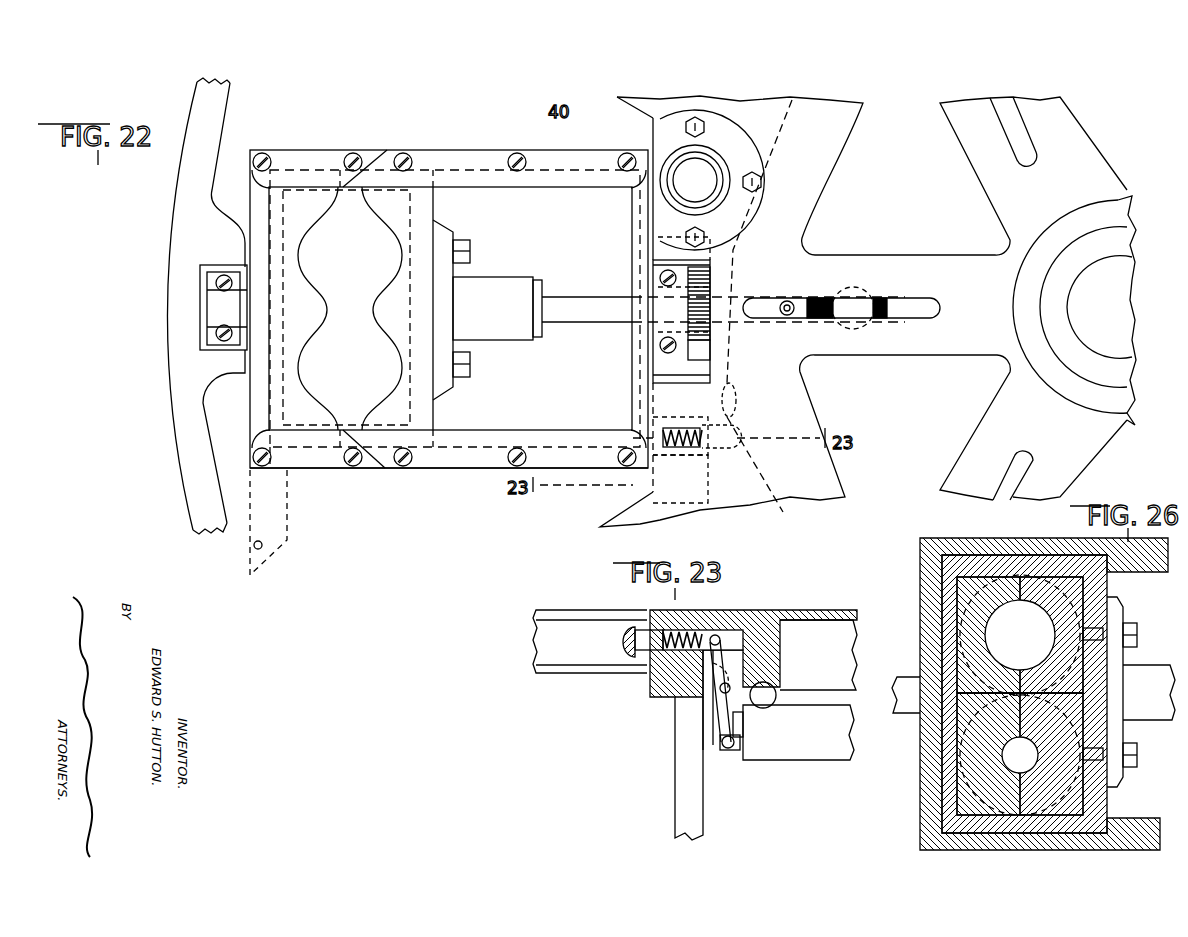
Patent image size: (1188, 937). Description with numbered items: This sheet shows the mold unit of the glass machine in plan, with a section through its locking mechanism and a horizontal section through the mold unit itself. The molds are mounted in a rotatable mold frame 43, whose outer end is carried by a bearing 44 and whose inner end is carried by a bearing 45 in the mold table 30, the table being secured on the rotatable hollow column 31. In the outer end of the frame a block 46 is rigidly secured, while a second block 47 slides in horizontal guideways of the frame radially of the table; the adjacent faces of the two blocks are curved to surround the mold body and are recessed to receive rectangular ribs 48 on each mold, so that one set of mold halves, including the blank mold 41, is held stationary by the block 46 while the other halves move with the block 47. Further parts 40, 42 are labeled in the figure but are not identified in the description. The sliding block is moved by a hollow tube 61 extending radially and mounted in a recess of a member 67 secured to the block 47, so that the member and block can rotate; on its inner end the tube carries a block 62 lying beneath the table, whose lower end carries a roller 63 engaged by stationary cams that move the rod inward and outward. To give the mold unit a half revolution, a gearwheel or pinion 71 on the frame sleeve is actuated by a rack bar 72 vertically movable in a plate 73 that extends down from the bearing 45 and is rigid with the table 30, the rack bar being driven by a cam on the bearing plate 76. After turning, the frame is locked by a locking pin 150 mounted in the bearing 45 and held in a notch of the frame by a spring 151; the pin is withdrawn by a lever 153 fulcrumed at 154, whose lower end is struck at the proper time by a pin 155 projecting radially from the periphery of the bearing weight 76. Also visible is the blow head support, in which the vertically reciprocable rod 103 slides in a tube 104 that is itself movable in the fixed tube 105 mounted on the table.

In FIG. 22, the mold table 30 is at (183, 204).
In FIG. 22, the rotatable hollow column 31 is at (1100, 240).
In FIG. 22, the housing 40 is at (449, 362).
In FIG. 22, the rotatable mold frame 43 is at (462, 473).
In FIG. 23, the rotatable mold frame 43 is at (574, 654).
In FIG. 26, the rotatable mold frame 43 is at (950, 541).
In FIG. 22, the bearing 44 is at (214, 289).
In FIG. 22, the bearing 45 is at (668, 369).
In FIG. 23, the bearing 45 is at (658, 690).
In FIG. 22, the block 46 is at (278, 243).
In FIG. 22, the slidable block 47 is at (425, 211).
In FIG. 22, the hollow tube 61 is at (597, 301).
In FIG. 22, the block 62 is at (832, 296).
In FIG. 22, the roller 63 is at (860, 290).
In FIG. 22, the member 67 is at (507, 283).
In FIG. 22, the gearwheel or pinion 71 is at (712, 290).
In FIG. 22, the rack bar 72 is at (700, 351).
In FIG. 23, the plate 73 is at (680, 796).
In FIG. 22, the bearing plate 76 is at (771, 481).
In FIG. 23, the bearing plate 76 is at (797, 750).
In FIG. 22, the vertically reciprocable rod 103 is at (705, 175).
In FIG. 22, the tube 104 is at (722, 173).
In FIG. 22, the fixed tube 105 is at (728, 198).
In FIG. 22, the locking pin 150 is at (661, 428).
In FIG. 23, the locking pin 150 is at (645, 630).
In FIG. 22, the spring 151 is at (686, 455).
In FIG. 23, the spring 151 is at (690, 627).
In FIG. 23, the lever 153 is at (723, 714).
In FIG. 23, the fulcrum 154 is at (731, 688).
In FIG. 22, the pin 155 is at (733, 413).
In FIG. 23, the pin 155 is at (734, 758).
In FIG. 26, the blank mold 41 is at (982, 763).
In FIG. 26, the upper roller 42 is at (977, 611).
In FIG. 26, the rectangular ribs 48 is at (958, 585).